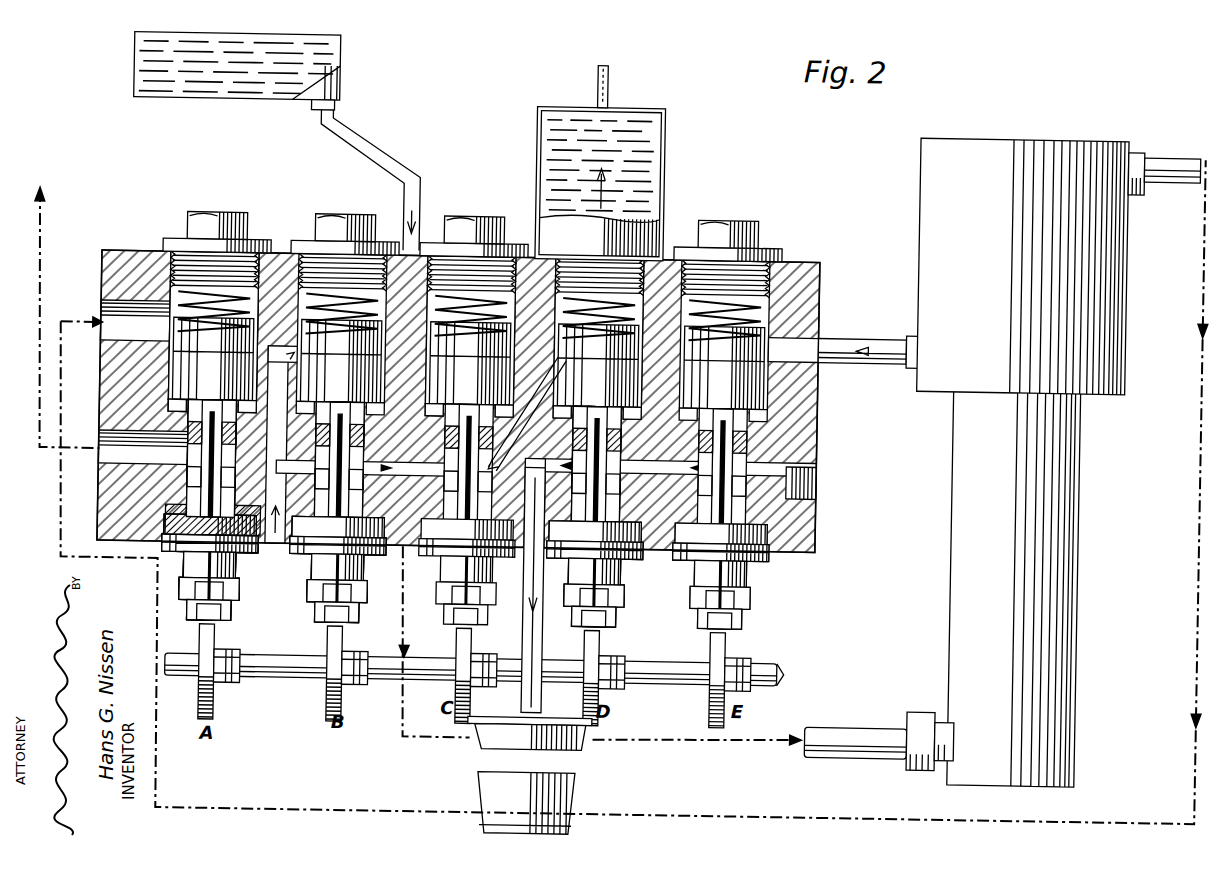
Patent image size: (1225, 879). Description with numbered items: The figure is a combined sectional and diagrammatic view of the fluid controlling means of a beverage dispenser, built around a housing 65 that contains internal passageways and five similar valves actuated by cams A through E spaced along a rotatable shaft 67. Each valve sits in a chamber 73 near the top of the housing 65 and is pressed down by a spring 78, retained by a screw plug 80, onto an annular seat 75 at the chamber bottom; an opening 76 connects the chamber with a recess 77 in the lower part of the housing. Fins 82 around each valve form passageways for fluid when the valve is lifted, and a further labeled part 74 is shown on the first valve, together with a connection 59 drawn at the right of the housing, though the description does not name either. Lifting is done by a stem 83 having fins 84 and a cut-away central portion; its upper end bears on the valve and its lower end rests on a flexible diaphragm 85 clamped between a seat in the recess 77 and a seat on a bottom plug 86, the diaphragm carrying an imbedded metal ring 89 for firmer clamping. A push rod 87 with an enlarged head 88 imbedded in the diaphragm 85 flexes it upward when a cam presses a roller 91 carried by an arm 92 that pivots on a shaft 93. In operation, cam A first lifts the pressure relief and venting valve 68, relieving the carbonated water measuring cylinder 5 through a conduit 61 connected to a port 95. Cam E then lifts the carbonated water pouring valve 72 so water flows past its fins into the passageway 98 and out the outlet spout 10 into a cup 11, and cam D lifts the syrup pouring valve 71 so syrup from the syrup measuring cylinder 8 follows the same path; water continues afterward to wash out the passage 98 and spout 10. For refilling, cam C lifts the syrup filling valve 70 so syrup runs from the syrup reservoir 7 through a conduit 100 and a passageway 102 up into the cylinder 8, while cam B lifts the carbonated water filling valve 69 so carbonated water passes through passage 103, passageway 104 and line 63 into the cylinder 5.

The carbonated water receiving and measuring cylinder 5 is at (1055, 463).
The syrup reservoir 7 is at (330, 75).
The syrup measuring cylinder 8 is at (665, 162).
The outlet spout 10 is at (548, 628).
The cup 11 is at (584, 790).
The pressure pipe 59 is at (860, 326).
The conduit 61 is at (780, 805).
The line 63 is at (710, 740).
The housing 65 is at (820, 508).
The rotatable shaft 67 is at (275, 676).
The pressure relief and venting valve 68 is at (213, 325).
The carbonated water filling valve 69 is at (385, 356).
The syrup filling valve 70 is at (512, 335).
The syrup pouring valve 71 is at (630, 325).
The carbonated water pouring valve 72 is at (760, 312).
The chamber 73 is at (175, 318).
The piston 74 is at (213, 332).
The annular seat 75 is at (556, 292).
The opening 76 is at (232, 432).
The recess 77 is at (235, 485).
The spring 78 is at (258, 310).
The screw plug 80 is at (248, 222).
The fins 82 is at (180, 350).
The stem 83 is at (232, 448).
The fins 84 is at (365, 420).
The flexible diaphragm 85 is at (362, 440).
The bottom plug 86 is at (238, 553).
The push rod 87 is at (236, 567).
The enlarged head 88 is at (190, 492).
The annular metal ring 89 is at (170, 527).
The roller 91 is at (238, 595).
The arm 92 is at (238, 580).
The shaft 93 is at (322, 575).
The port 95 is at (103, 306).
The passageway 98 is at (670, 503).
The conduit 100 is at (395, 155).
The passageway 102 is at (527, 414).
The passage 103 is at (290, 425).
The passageway 104 is at (361, 464).